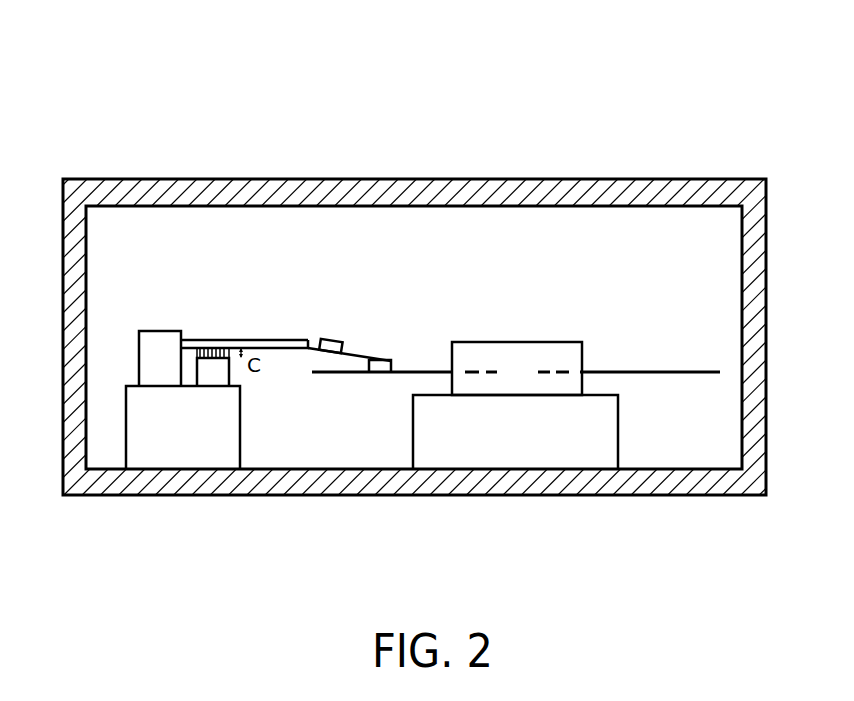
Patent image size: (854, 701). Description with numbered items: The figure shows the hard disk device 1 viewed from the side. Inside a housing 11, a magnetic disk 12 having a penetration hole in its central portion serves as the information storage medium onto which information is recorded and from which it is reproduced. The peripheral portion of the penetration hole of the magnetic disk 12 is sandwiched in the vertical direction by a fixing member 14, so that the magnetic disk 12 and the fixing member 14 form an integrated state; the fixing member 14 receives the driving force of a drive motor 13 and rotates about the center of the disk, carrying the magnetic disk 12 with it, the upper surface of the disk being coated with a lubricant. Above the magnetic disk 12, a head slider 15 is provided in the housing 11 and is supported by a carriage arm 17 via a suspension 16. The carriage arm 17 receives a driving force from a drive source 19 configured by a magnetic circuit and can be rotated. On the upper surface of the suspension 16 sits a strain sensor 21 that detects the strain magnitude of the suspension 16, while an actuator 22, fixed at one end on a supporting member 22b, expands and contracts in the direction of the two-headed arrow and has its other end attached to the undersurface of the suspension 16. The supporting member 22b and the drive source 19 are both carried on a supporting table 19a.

The hard disk device 1 is at (449, 84).
The housing 11 is at (692, 179).
The magnetic disk 12 is at (425, 370).
The drive motor 13 is at (587, 445).
The fixing member 14 is at (517, 372).
The head slider 15 is at (382, 365).
The suspension 16 is at (350, 352).
The carriage arm 17 is at (283, 348).
The drive source 19 is at (160, 360).
The supporting table 19a is at (194, 427).
The strain sensor 21 is at (332, 338).
The actuator 22 is at (213, 338).
The supporting member 22b is at (203, 367).